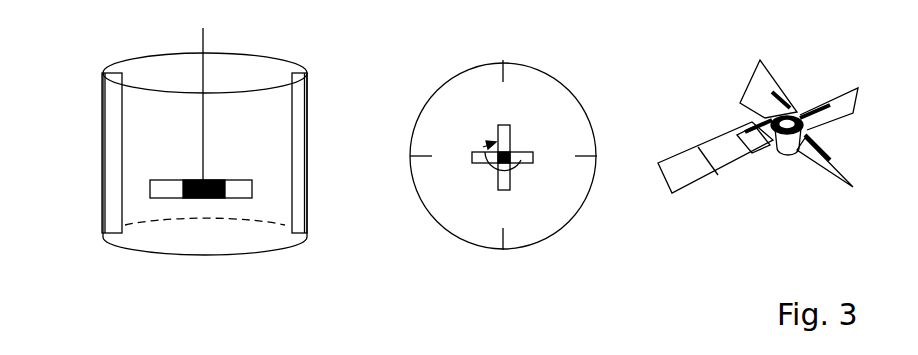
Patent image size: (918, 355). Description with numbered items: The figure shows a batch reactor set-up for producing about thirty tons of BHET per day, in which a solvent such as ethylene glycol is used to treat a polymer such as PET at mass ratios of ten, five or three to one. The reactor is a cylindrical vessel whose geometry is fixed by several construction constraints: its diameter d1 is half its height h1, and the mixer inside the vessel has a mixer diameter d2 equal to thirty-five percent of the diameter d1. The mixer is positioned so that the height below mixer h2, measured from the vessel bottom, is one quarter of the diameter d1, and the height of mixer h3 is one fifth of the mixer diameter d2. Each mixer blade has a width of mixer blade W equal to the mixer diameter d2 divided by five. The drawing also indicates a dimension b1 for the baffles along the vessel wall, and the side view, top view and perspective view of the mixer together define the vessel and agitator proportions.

The height h1 is at (75, 232).
The height below mixer h2 is at (205, 237).
The height of mixer h3 is at (345, 199).
The diameter d1 is at (303, 275).
The mixer diameter d2 is at (247, 208).
The baffle width b1 is at (307, 73).
The width of mixer blade W is at (683, 217).